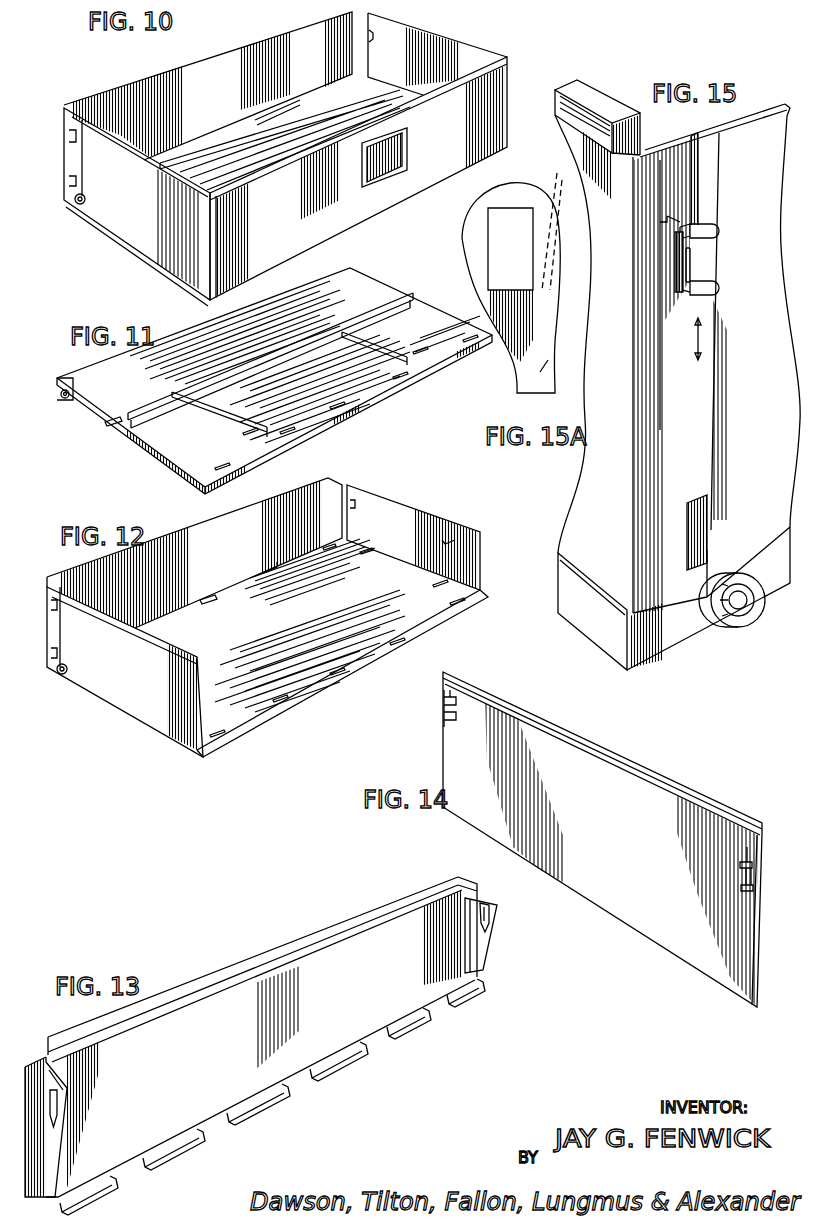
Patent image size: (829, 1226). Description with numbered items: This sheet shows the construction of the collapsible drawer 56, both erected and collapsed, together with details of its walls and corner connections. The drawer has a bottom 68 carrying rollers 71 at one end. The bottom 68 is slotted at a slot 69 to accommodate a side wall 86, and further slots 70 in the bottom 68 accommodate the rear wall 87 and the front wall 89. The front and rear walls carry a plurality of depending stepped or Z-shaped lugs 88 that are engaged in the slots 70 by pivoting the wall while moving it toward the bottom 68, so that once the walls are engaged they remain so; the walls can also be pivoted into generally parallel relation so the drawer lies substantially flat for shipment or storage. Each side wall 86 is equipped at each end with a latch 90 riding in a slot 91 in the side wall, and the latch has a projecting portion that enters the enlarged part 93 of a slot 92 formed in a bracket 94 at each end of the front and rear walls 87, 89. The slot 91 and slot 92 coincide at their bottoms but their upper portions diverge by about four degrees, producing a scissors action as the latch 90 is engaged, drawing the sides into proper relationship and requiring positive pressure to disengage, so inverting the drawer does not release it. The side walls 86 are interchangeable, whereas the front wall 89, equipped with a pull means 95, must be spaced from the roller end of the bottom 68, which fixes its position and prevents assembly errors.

In FIG. 10, the drawer 56 is at (137, 252).
In FIG. 12, the drawer 56 is at (387, 492).
In FIG. 12, the bottom 68 is at (300, 662).
In FIG. 12, the slot 69 is at (457, 540).
In FIG. 11, the slots 70 is at (290, 432).
In FIG. 12, the slots 70 is at (213, 602).
In FIG. 10, the rollers 71 is at (78, 205).
In FIG. 12, the rollers 71 is at (61, 675).
In FIG. 15, the rollers 71 is at (752, 622).
In FIG. 12, the side wall 86 is at (410, 517).
In FIG. 14, the side wall 86 is at (632, 782).
In FIG. 10, the rear wall 87 is at (270, 58).
In FIG. 12, the rear wall 87 is at (257, 554).
In FIG. 13, the lugs 88 is at (348, 1060).
In FIG. 10, the front wall 89 is at (307, 212).
In FIG. 13, the front wall 89 is at (297, 970).
In FIG. 15, the latch 90 is at (707, 233).
In FIG. 14, the slot 91 is at (751, 858).
In FIG. 15, the slot 91 is at (697, 160).
In FIG. 15A, the slot 91 is at (557, 218).
In FIG. 13, the slot 92 is at (496, 921).
In FIG. 15, the slot 92 is at (700, 262).
In FIG. 15A, the slot 92 is at (542, 372).
In FIG. 13, the enlarged part 93 is at (491, 903).
In FIG. 15, the enlarged part 93 is at (668, 222).
In FIG. 15A, the enlarged part 93 is at (513, 213).
In FIG. 13, the bracket 94 is at (485, 945).
In FIG. 15, the bracket 94 is at (718, 180).
In FIG. 15A, the bracket 94 is at (465, 243).
In FIG. 10, the pull means 95 is at (405, 148).